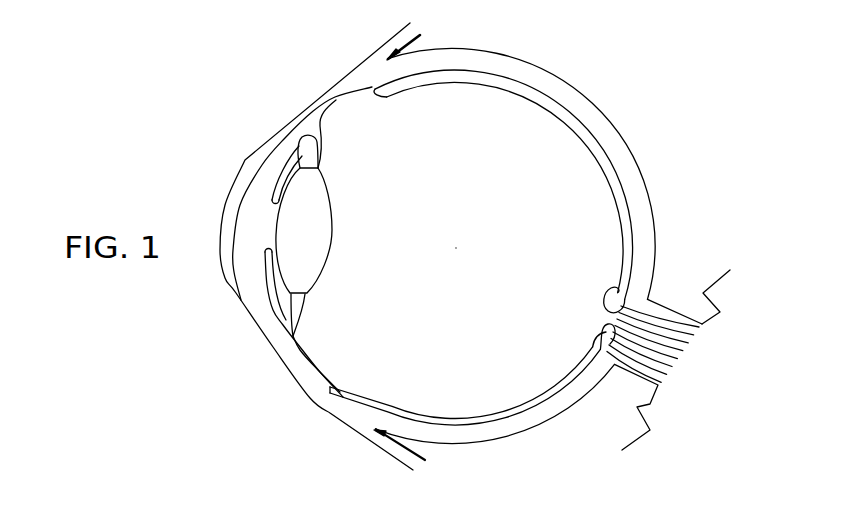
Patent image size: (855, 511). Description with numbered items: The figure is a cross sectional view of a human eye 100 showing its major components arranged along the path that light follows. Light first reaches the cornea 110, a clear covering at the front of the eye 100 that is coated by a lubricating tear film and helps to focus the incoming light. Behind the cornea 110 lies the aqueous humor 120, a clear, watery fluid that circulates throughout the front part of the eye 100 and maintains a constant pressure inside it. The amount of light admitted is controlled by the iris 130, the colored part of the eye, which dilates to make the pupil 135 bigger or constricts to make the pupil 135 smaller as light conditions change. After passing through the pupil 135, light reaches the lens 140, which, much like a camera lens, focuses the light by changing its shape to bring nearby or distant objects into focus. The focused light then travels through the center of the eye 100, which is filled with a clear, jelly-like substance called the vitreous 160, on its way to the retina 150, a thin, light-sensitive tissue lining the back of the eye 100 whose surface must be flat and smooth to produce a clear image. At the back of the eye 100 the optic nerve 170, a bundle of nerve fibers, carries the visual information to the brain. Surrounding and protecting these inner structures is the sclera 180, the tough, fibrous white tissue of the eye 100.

The eye 100 is at (275, 64).
The cornea 110 is at (224, 278).
The aqueous humor 120 is at (260, 298).
The iris 130 is at (280, 325).
The pupil 135 is at (270, 216).
The lens 140 is at (335, 210).
The retina 150 is at (601, 168).
The vitreous 160 is at (472, 256).
The optic nerve 170 is at (663, 306).
The sclera 180 is at (581, 91).